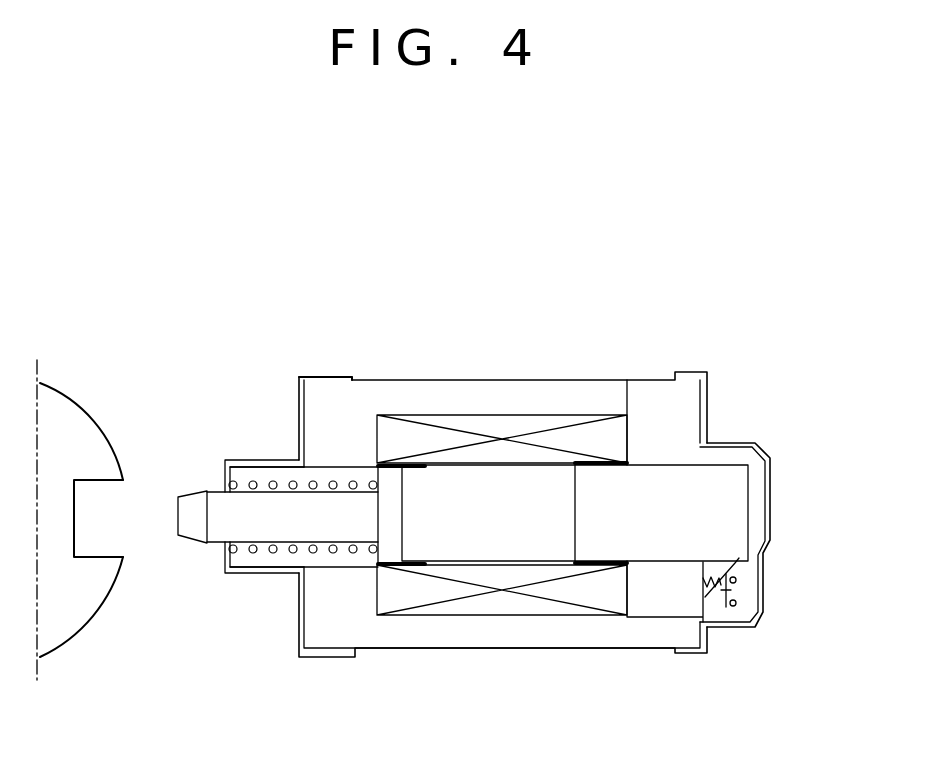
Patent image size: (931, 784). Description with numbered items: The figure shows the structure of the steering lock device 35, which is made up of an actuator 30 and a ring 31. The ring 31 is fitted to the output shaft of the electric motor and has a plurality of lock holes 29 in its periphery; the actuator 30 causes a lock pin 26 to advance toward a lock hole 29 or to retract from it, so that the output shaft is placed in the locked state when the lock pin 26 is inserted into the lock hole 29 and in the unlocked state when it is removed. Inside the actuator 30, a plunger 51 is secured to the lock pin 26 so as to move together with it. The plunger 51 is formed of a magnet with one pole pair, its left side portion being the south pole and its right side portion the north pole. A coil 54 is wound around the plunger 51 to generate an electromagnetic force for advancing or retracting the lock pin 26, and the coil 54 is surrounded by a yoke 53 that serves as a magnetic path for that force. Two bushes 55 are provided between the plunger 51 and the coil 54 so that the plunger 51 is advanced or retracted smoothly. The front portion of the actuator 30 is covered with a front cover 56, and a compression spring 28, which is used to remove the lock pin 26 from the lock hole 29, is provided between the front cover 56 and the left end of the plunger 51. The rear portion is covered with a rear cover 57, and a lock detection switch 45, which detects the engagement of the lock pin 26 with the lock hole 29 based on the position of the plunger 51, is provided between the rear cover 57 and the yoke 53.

The lock pin 26 is at (237, 525).
The compression spring 28 is at (250, 480).
The lock hole 29 is at (87, 550).
The actuator 30 is at (558, 672).
The ring 31 is at (63, 423).
The steering lock device 35 is at (500, 314).
The lock detection switch 45 is at (743, 588).
The plunger 51 is at (720, 480).
The yoke 53 is at (340, 400).
The coil 54 is at (512, 422).
The bush 55 is at (600, 460).
The front cover 56 is at (315, 378).
The rear cover 57 is at (771, 492).